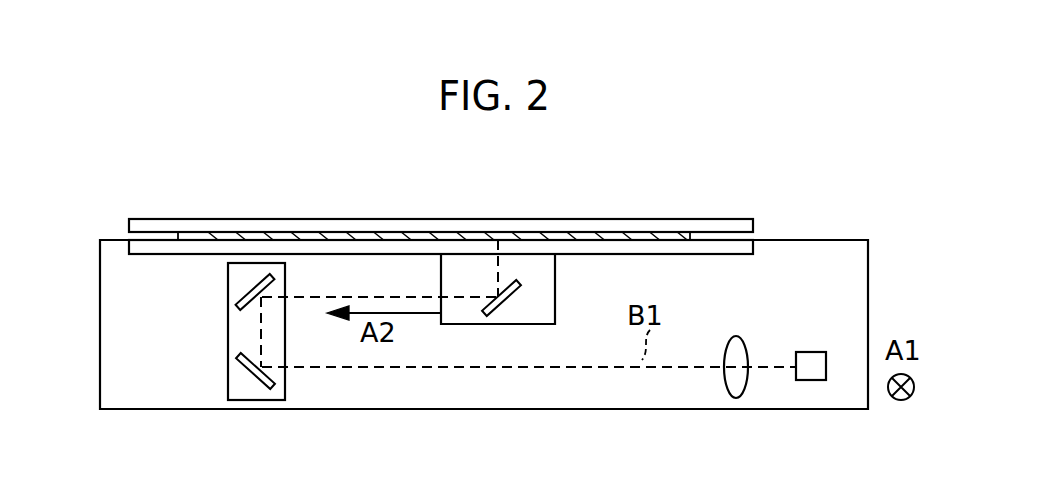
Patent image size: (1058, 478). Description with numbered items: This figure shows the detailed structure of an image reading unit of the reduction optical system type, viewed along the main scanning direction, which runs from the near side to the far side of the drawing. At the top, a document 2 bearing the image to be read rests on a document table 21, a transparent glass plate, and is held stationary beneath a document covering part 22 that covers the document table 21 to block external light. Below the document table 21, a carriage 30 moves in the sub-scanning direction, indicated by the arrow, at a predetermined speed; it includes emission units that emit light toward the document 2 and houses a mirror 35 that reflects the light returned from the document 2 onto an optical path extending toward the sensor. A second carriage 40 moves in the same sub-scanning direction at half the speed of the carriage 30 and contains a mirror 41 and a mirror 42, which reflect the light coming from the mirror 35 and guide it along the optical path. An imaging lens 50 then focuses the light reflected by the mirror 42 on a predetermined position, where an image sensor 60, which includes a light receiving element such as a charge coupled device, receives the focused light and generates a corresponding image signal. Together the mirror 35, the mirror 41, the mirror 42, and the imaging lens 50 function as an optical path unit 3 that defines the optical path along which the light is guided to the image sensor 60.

The document 2 is at (445, 236).
The optical path unit 3 is at (602, 388).
The document table 21 is at (672, 254).
The document covering part 22 is at (700, 219).
The carriage 30 is at (527, 305).
The mirror 35 is at (506, 307).
The carriage 40 is at (215, 331).
The mirror 41 is at (253, 284).
The mirror 42 is at (257, 378).
The imaging lens 50 is at (744, 342).
The image sensor 60 is at (808, 352).